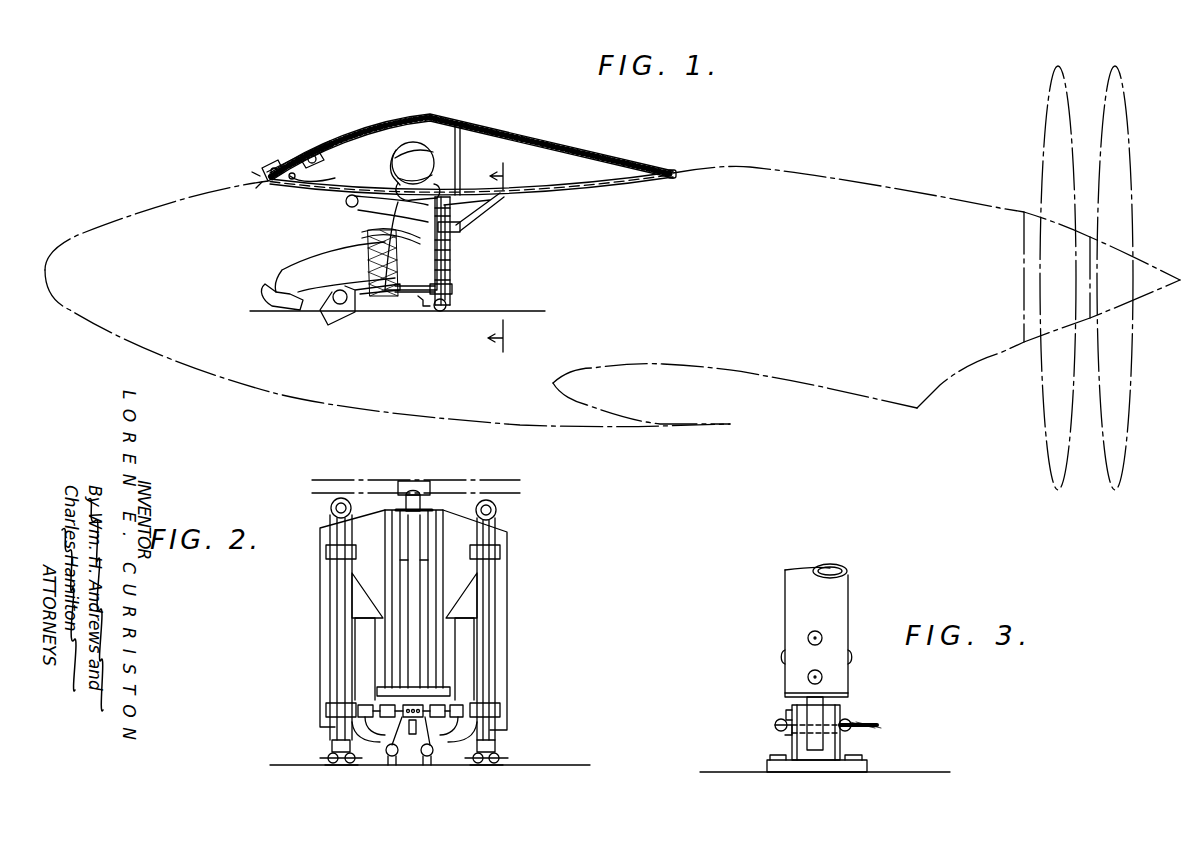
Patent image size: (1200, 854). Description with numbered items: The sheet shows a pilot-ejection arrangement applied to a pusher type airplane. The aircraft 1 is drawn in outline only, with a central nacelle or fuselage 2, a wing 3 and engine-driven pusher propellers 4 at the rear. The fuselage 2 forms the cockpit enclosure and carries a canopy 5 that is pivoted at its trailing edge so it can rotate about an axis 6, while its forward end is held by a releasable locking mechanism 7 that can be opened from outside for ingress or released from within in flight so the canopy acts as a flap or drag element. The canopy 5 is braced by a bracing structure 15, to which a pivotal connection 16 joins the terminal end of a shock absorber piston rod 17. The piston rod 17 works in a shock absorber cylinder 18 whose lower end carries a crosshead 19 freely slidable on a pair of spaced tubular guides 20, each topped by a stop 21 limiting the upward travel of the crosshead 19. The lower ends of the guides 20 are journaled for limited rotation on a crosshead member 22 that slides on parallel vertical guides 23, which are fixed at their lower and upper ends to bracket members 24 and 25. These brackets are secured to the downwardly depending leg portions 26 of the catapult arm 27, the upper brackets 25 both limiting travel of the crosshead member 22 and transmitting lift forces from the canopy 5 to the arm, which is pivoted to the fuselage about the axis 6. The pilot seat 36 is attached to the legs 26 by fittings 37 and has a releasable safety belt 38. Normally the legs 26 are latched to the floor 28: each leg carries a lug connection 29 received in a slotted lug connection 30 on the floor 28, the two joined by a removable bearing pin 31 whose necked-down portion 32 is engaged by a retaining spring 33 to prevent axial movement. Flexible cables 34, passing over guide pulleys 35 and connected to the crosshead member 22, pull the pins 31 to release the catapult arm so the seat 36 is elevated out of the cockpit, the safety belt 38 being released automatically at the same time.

In FIG. 1, the aircraft 1 is at (822, 174).
In FIG. 1, the fuselage 2 is at (752, 157).
In FIG. 1, the wing 3 is at (745, 377).
In FIG. 1, the pusher propellers 4 is at (1060, 92).
In FIG. 1, the canopy 5 is at (600, 150).
In FIG. 1, the axis 6 is at (675, 169).
In FIG. 1, the releasable locking mechanism 7 is at (256, 168).
In FIG. 1, the bracing structure 15 is at (462, 153).
In FIG. 2, the pivotal connection 16 is at (432, 481).
In FIG. 2, the shock absorber piston rod 17 is at (330, 489).
In FIG. 1, the shock absorber cylinder 18 is at (452, 246).
In FIG. 2, the shock absorber cylinder 18 is at (436, 548).
In FIG. 2, the crosshead 19 is at (426, 734).
In FIG. 2, the tubular guides 20 is at (392, 556).
In FIG. 2, the stop 21 is at (392, 510).
In FIG. 2, the crosshead member 22 is at (380, 735).
In FIG. 2, the vertical guides 23 is at (368, 632).
In FIG. 2, the lower bracket members 24 is at (345, 740).
In FIG. 2, the upper bracket members 25 is at (378, 590).
In FIG. 1, the downwardly depending leg portions 26 is at (450, 268).
In FIG. 2, the downwardly depending leg portions 26 is at (337, 575).
In FIG. 3, the downwardly depending leg portions 26 is at (838, 597).
In FIG. 1, the catapult arm 27 is at (606, 190).
In FIG. 2, the catapult arm 27 is at (331, 508).
In FIG. 1, the floor 28 is at (498, 311).
In FIG. 2, the floor 28 is at (540, 765).
In FIG. 3, the floor 28 is at (915, 772).
In FIG. 3, the lug connection 29 is at (818, 713).
In FIG. 3, the slotted lug connection 30 is at (832, 743).
In FIG. 3, the bearing pin 31 is at (840, 717).
In FIG. 3, the necked-down portion 32 is at (788, 737).
In FIG. 3, the retaining spring 33 is at (785, 710).
In FIG. 2, the flexible cables 34 is at (355, 765).
In FIG. 3, the flexible cables 34 is at (878, 726).
In FIG. 2, the guide pulleys 35 is at (396, 760).
In FIG. 1, the pilot seat 36 is at (418, 300).
In FIG. 2, the pilot seat 36 is at (508, 679).
In FIG. 1, the fittings 37 is at (460, 222).
In FIG. 2, the fittings 37 is at (326, 552).
In FIG. 1, the safety belt 38 is at (363, 230).